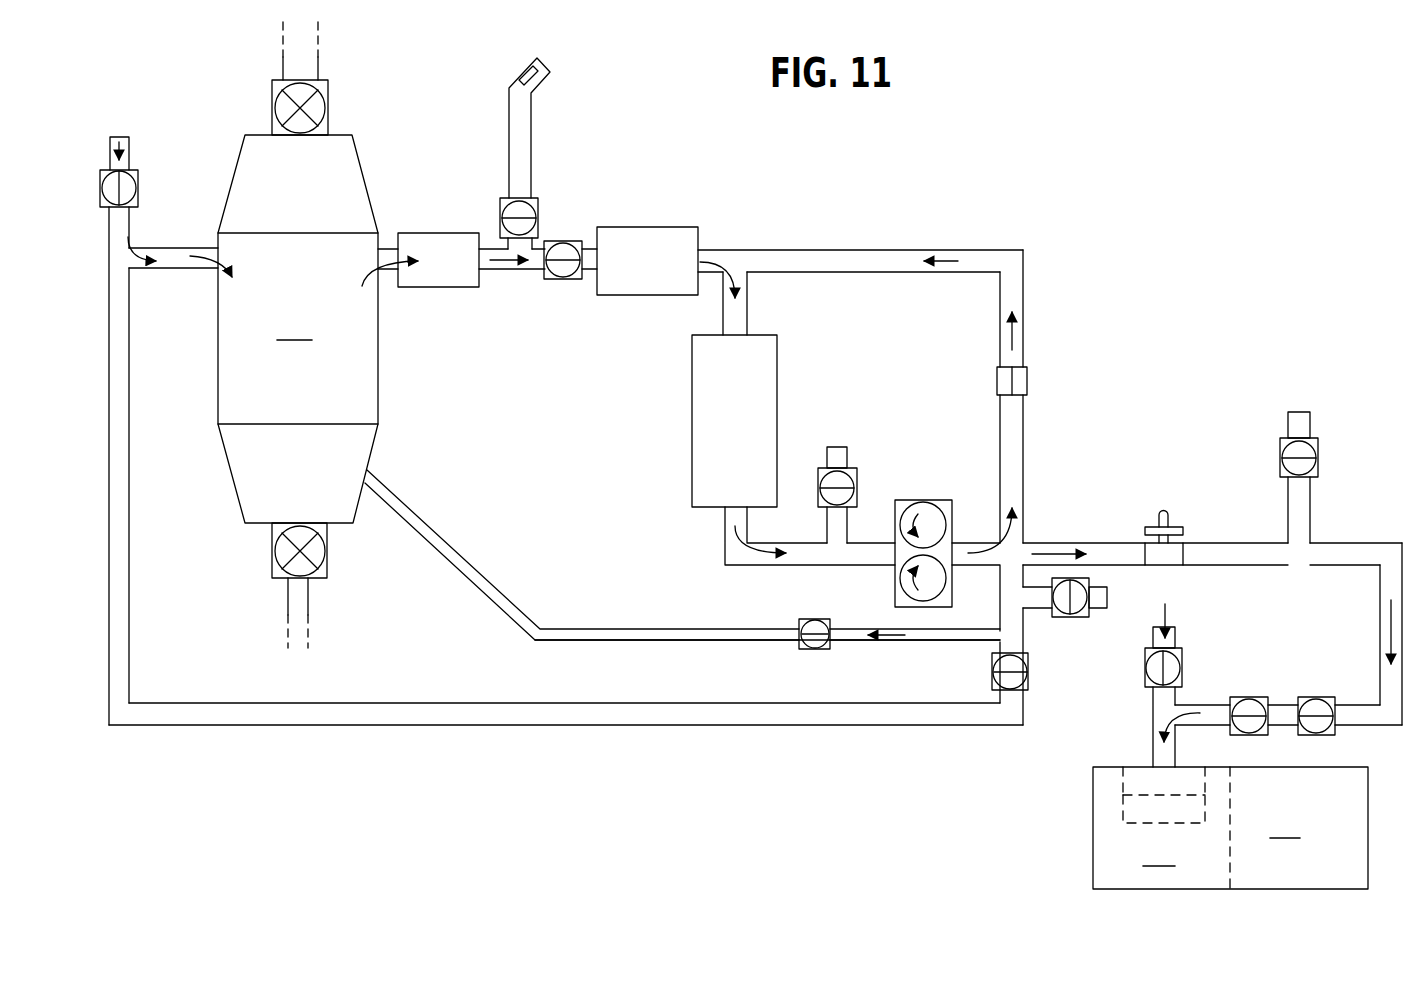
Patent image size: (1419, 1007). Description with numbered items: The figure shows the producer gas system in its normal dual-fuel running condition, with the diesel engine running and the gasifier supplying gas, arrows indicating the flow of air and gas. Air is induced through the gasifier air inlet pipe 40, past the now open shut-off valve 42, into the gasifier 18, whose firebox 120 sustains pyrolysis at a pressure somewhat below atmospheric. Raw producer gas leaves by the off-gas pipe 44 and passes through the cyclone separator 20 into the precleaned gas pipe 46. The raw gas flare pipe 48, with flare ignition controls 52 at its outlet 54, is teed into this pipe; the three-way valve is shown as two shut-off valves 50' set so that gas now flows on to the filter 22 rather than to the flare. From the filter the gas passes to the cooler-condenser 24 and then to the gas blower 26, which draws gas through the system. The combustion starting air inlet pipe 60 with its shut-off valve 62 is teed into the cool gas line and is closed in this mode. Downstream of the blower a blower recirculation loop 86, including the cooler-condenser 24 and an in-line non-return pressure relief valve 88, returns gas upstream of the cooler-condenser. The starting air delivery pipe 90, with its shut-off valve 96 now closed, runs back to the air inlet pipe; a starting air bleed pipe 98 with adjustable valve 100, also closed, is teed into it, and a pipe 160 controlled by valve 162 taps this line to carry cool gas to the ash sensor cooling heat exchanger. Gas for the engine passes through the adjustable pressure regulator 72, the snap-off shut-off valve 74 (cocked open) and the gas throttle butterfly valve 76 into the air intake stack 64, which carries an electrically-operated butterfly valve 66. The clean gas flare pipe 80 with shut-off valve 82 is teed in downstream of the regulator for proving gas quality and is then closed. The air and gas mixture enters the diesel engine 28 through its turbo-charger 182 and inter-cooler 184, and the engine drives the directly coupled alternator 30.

The gasifier 18 is at (233, 176).
The firebox 120 is at (294, 328).
The gasifier air inlet pipe 40 is at (131, 152).
The shut-off valve 42 is at (139, 176).
The off-gas pipe 44 is at (388, 247).
The cyclone separator 20 is at (440, 233).
The precleaned gas pipe 46 is at (496, 246).
The raw gas flare pipe 48 is at (522, 149).
The shut-off valves 50' is at (550, 254).
The flare ignition controls 52 is at (527, 75).
The outlet 54 is at (543, 64).
The filter 22 is at (655, 230).
The cooler-condenser 24 is at (700, 397).
The gas blower 26 is at (938, 500).
The combustion starting air inlet pipe 60 is at (827, 458).
The shut-off valve 62 is at (858, 479).
The blower recirculation loop 86 is at (988, 226).
The non-return pressure relief valve 88 is at (1028, 385).
The pipe 160 is at (622, 628).
The valve 162 is at (812, 619).
The adjustable pressure regulator 72 is at (1158, 520).
The adjustable valve 100 is at (1062, 617).
The starting air bleed pipe 98 is at (1100, 608).
The shut-off valve 96 is at (1028, 680).
The starting air delivery pipe 90 is at (660, 728).
The air intake stack 64 is at (1177, 636).
The butterfly valve 66 is at (1183, 679).
The gas throttle butterfly valve 76 is at (1256, 697).
The snap-off shut-off valve 74 is at (1321, 697).
The clean gas flare pipe 80 is at (1311, 418).
The shut-off valve 82 is at (1319, 470).
The turbo-charger 182 is at (1157, 785).
The inter-cooler 184 is at (1152, 810).
The diesel engine 28 is at (1230, 828).
The alternator 30 is at (1265, 828).